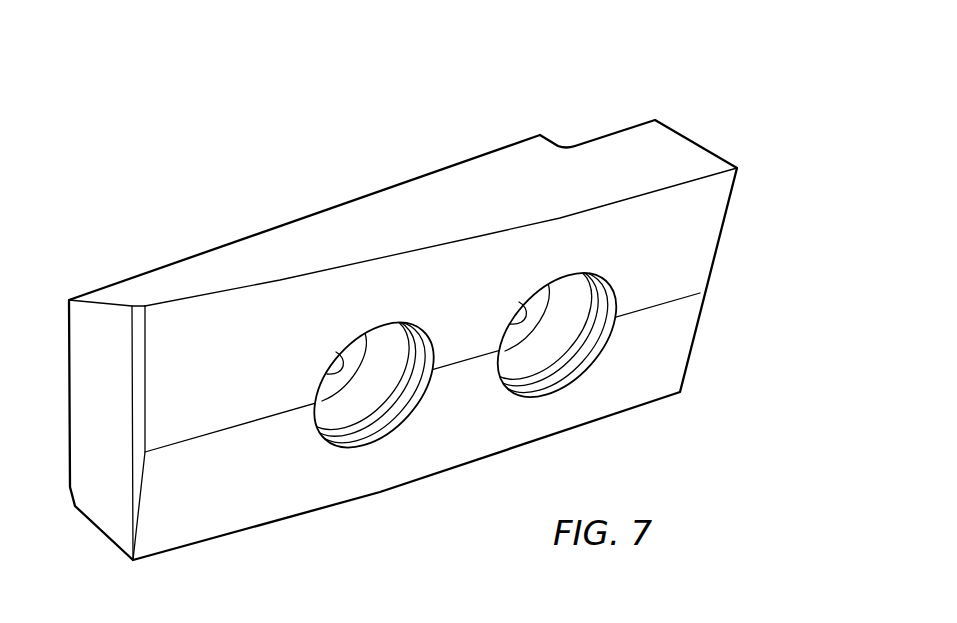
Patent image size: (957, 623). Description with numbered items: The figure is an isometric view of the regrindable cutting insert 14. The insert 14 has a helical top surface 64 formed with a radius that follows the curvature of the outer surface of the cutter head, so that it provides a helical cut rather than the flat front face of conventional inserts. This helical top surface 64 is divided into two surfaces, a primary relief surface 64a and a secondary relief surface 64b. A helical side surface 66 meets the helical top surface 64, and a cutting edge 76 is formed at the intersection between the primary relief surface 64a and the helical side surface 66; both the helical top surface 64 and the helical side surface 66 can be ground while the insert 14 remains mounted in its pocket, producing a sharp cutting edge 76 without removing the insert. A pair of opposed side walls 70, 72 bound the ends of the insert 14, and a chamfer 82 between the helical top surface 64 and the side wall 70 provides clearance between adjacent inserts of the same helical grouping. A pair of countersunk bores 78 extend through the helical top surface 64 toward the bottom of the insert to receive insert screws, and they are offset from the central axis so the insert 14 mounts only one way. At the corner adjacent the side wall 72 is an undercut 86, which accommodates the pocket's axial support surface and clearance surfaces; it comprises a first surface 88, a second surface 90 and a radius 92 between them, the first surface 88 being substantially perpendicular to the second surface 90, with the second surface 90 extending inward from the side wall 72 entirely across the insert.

The cutting insert 14 is at (227, 205).
The helical top surface 64 is at (492, 412).
The primary relief surface 64a is at (676, 233).
The secondary relief surface 64b is at (662, 352).
The helical side surface 66 is at (378, 230).
The side wall 70 is at (97, 383).
The side wall 72 is at (688, 128).
The cutting edge 76 is at (475, 237).
The countersunk bores 78 is at (336, 362).
The chamfer 82 is at (133, 455).
The undercut 86 is at (590, 107).
The first surface 88 is at (546, 134).
The second surface 90 is at (630, 128).
The radius 92 is at (566, 147).